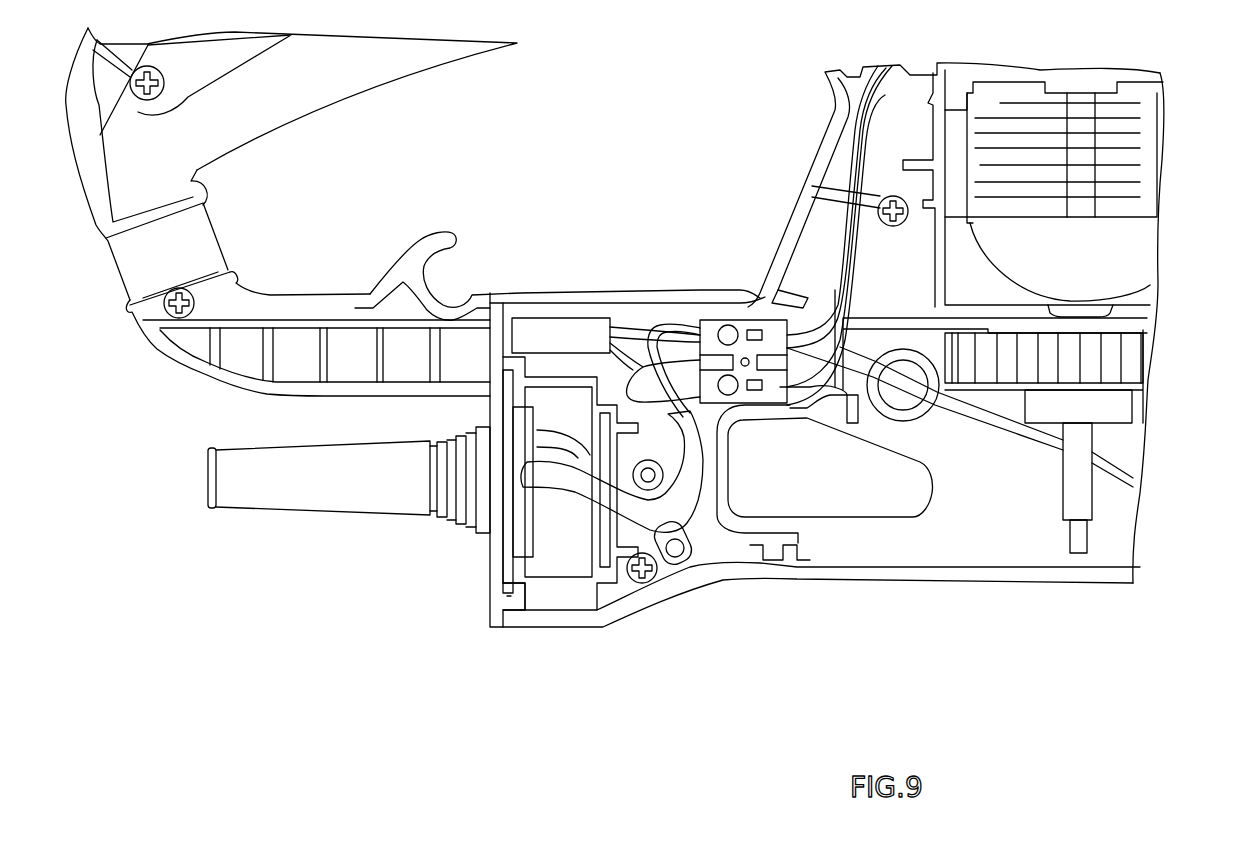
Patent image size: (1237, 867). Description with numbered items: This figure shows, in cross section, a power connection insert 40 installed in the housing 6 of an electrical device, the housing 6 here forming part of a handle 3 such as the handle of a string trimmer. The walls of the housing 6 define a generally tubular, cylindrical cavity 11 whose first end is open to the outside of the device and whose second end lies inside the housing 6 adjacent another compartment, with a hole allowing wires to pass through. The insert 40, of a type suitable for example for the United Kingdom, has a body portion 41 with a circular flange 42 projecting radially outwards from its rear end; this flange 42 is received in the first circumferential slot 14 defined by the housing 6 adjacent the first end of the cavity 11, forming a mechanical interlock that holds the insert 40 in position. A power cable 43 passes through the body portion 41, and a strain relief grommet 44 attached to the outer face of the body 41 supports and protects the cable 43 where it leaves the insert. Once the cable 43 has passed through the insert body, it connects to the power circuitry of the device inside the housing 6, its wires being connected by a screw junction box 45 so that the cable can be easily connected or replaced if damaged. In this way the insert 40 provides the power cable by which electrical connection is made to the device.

The handle 3 is at (1152, 303).
The housing 6 is at (1137, 450).
The cavity 11 is at (552, 560).
The first circumferential slot 14 is at (465, 671).
The insert 40 is at (273, 583).
The body portion 41 is at (503, 530).
The circular flange 42 is at (508, 600).
The power cable 43 is at (673, 500).
The strain relief grommet 44 is at (263, 487).
The screw junction box 45 is at (753, 332).